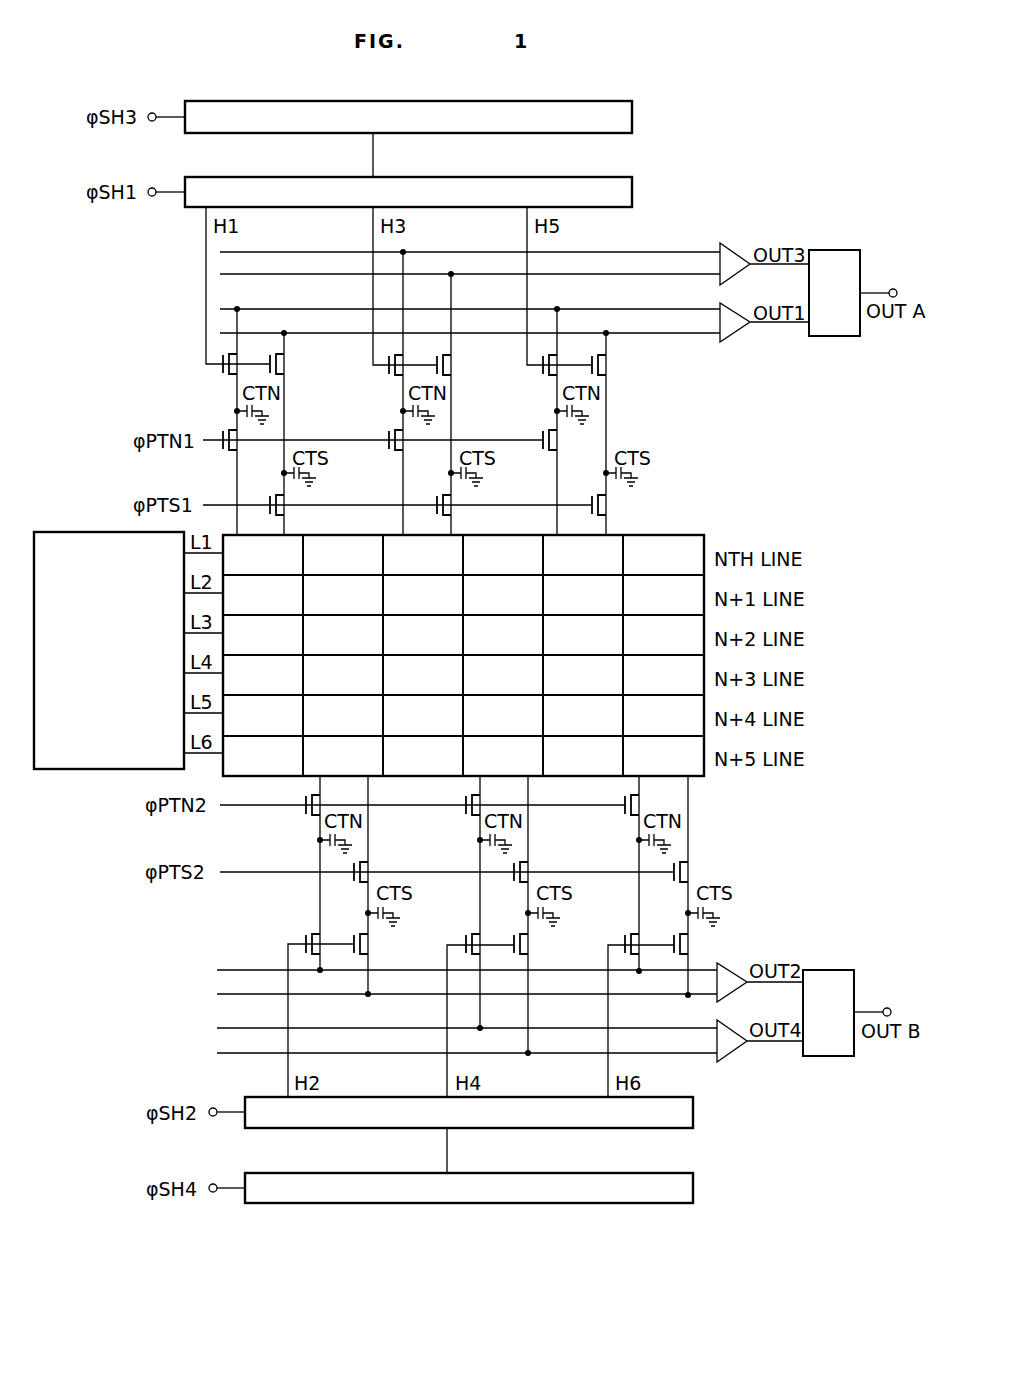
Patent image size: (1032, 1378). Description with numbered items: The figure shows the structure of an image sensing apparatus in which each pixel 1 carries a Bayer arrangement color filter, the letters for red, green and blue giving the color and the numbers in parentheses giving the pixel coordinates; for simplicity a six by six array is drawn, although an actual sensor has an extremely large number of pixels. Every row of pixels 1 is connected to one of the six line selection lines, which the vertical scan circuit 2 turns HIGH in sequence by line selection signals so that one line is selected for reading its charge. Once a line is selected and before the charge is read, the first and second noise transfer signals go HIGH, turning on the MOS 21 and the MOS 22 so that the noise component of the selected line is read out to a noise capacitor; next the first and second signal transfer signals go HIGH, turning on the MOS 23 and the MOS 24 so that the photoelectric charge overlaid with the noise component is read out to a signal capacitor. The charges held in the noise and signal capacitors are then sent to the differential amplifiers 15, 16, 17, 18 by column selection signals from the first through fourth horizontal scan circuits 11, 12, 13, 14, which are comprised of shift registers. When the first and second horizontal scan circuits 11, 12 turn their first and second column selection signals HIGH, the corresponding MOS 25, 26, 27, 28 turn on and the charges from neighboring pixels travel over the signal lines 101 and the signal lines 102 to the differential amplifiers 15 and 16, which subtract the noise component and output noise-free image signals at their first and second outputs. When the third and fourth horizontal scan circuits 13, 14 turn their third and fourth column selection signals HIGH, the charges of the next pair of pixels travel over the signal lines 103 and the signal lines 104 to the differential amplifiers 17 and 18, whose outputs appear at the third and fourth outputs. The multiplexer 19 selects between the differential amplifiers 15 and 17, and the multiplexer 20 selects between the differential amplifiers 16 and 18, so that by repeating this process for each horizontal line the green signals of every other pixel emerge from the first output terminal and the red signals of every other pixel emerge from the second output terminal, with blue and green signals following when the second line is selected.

The pixel 1 is at (701, 534).
The vertical scan circuit 2 is at (86, 770).
The first horizontal scan circuit 11 is at (633, 192).
The second horizontal scan circuit 12 is at (694, 1112).
The third horizontal scan circuit 13 is at (633, 117).
The fourth horizontal scan circuit 14 is at (694, 1188).
The differential amplifier 15 is at (735, 341).
The differential amplifier 16 is at (730, 965).
The differential amplifier 17 is at (735, 243).
The differential amplifier 18 is at (738, 1052).
The multiplexer 19 is at (837, 250).
The multiplexer 20 is at (827, 972).
The MOS 21 is at (215, 458).
The MOS 22 is at (300, 814).
The MOS 23 is at (286, 511).
The MOS 24 is at (374, 868).
The MOS 25 is at (215, 372).
The MOS 26 is at (289, 363).
The MOS 27 is at (303, 934).
The MOS 28 is at (369, 945).
The signal lines 101 is at (200, 340).
The signal lines 102 is at (210, 963).
The signal lines 103 is at (200, 282).
The signal lines 104 is at (210, 1022).